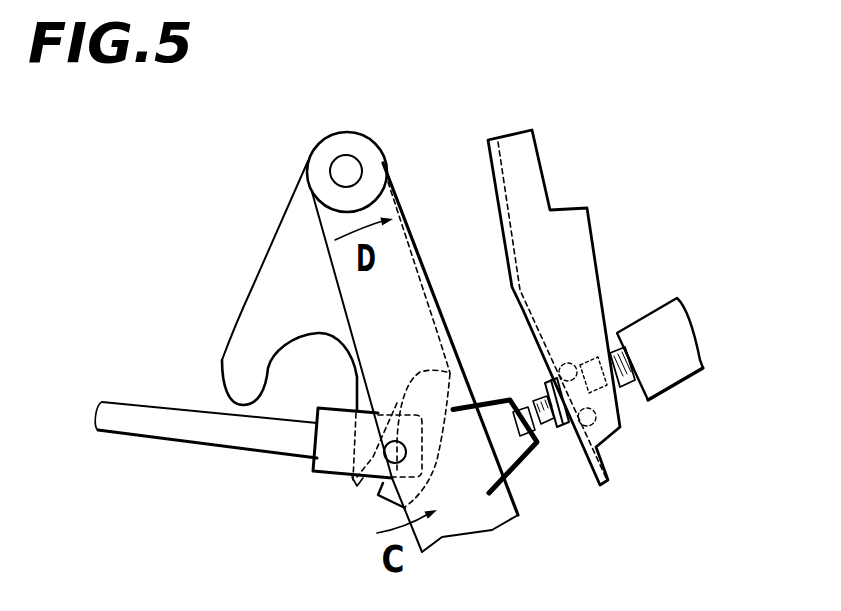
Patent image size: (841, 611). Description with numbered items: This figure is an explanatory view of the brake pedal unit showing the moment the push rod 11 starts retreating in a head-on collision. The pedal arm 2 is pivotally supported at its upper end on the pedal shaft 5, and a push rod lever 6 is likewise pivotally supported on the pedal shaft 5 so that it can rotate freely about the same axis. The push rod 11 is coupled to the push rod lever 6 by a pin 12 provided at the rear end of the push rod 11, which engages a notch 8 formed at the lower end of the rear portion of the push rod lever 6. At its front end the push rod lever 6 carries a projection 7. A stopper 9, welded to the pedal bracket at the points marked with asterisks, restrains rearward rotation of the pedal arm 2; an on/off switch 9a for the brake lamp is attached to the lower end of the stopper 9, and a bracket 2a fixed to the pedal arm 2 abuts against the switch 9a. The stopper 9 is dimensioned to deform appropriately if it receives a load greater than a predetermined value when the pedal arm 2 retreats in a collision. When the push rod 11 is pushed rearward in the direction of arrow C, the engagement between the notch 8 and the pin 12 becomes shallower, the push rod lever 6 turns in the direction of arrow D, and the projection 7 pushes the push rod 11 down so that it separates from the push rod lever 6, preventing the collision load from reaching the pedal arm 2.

The pedal arm 2 is at (497, 520).
The bracket 2a is at (520, 470).
The pedal shaft 5 is at (352, 156).
The push rod lever 6 is at (273, 263).
The projection 7 is at (233, 387).
The notch 8 is at (363, 500).
The stopper 9 is at (583, 207).
The on/off switch 9a is at (663, 367).
The push rod 11 is at (188, 430).
The pin 12 is at (463, 360).